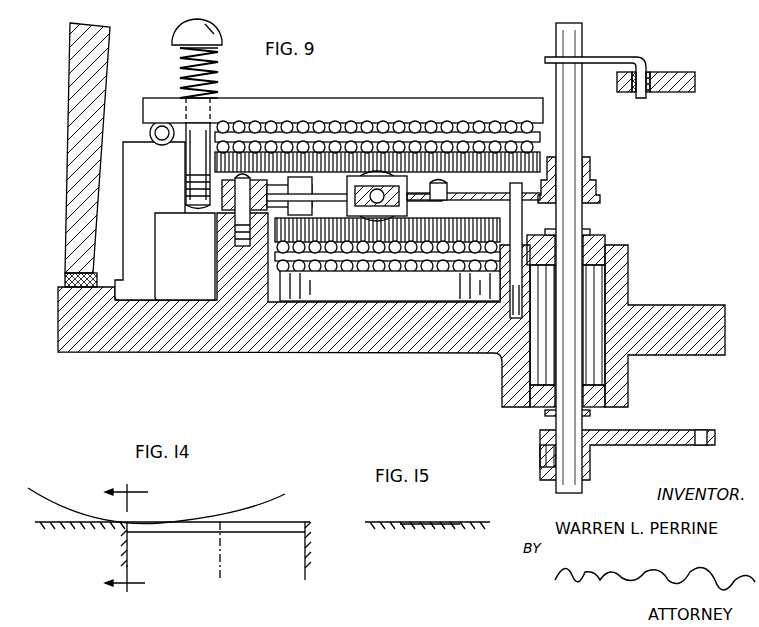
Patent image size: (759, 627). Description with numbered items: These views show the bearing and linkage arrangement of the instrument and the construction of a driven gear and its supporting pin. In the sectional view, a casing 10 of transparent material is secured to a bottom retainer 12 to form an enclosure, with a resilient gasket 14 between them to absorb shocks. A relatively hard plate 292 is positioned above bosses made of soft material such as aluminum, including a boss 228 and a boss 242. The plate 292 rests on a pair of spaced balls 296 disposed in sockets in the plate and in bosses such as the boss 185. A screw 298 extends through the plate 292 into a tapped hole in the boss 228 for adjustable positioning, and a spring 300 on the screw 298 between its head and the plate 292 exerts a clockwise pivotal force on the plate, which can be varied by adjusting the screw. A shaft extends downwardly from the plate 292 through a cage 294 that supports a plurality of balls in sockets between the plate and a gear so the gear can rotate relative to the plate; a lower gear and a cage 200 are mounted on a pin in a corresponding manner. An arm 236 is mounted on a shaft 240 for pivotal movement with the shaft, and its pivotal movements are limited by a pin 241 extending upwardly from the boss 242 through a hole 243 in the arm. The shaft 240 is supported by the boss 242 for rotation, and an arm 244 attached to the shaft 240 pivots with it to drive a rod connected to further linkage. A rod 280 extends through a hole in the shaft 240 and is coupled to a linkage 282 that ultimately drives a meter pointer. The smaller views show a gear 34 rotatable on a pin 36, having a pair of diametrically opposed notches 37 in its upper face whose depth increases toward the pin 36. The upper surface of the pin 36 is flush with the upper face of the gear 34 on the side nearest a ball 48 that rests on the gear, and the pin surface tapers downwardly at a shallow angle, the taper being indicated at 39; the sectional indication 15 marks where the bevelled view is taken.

In FIG. 9, the casing 10 is at (76, 111).
In FIG. 9, the bottom retainer 12 is at (688, 306).
In FIG. 9, the gasket 14 is at (66, 281).
In FIG. 9, the boss 185 is at (137, 178).
In FIG. 9, the boss 228 is at (160, 232).
In FIG. 9, the balls 296 is at (148, 133).
In FIG. 9, the screw 298 is at (184, 30).
In FIG. 9, the spring 300 is at (216, 78).
In FIG. 9, the plate 292 is at (418, 105).
In FIG. 9, the cage 294 is at (360, 138).
In FIG. 9, the arm 236 is at (458, 193).
In FIG. 9, the hole 243 is at (505, 203).
In FIG. 9, the cage 200 is at (362, 258).
In FIG. 9, the pin 241 is at (522, 223).
In FIG. 9, the boss 242 is at (630, 261).
In FIG. 9, the arm 244 is at (640, 430).
In FIG. 9, the shaft 240 is at (573, 111).
In FIG. 9, the rod 280 is at (600, 58).
In FIG. 9, the linkage 282 is at (668, 72).
In FIG. 14, the first ball 48 is at (156, 502).
In FIG. 14, the gear 34 is at (70, 524).
In FIG. 15, the gear 34 is at (418, 524).
In FIG. 14, the notches 37 is at (110, 520).
In FIG. 15, the notches 37 is at (442, 520).
In FIG. 14, the taper 39 is at (280, 520).
In FIG. 14, the pin 36 is at (298, 566).
In FIG. 14, the section line 15 is at (162, 539).